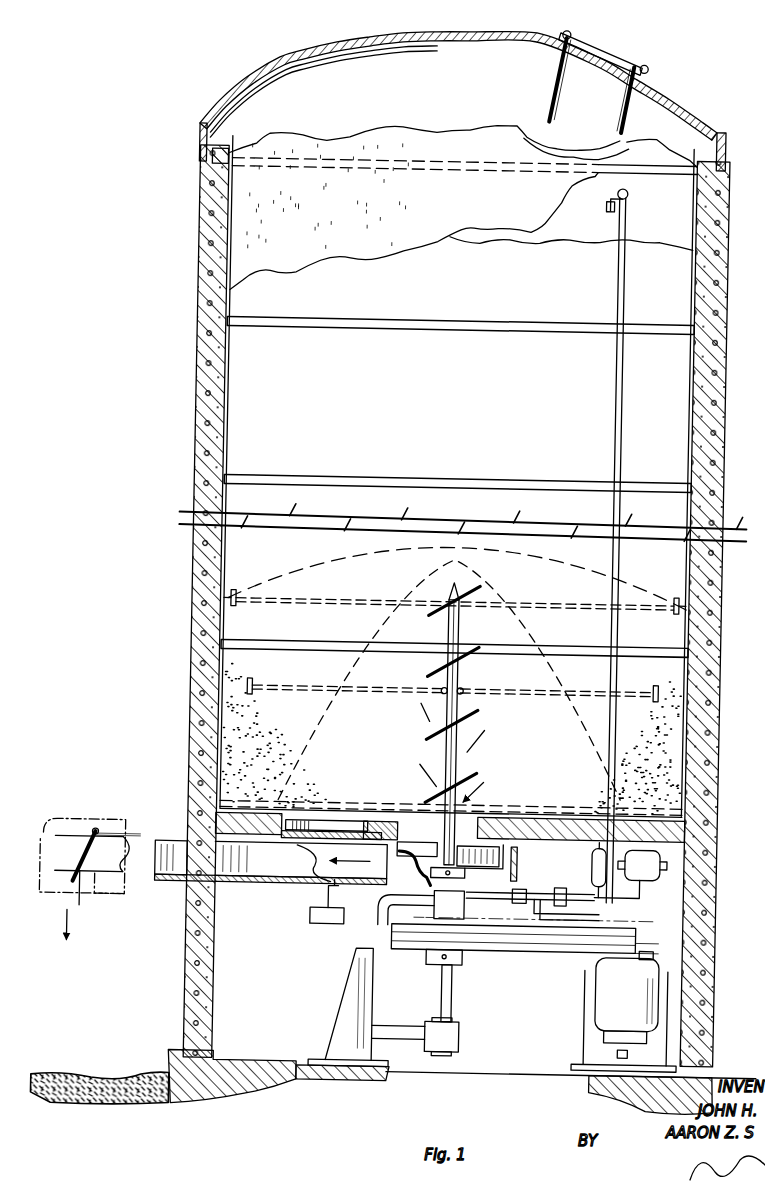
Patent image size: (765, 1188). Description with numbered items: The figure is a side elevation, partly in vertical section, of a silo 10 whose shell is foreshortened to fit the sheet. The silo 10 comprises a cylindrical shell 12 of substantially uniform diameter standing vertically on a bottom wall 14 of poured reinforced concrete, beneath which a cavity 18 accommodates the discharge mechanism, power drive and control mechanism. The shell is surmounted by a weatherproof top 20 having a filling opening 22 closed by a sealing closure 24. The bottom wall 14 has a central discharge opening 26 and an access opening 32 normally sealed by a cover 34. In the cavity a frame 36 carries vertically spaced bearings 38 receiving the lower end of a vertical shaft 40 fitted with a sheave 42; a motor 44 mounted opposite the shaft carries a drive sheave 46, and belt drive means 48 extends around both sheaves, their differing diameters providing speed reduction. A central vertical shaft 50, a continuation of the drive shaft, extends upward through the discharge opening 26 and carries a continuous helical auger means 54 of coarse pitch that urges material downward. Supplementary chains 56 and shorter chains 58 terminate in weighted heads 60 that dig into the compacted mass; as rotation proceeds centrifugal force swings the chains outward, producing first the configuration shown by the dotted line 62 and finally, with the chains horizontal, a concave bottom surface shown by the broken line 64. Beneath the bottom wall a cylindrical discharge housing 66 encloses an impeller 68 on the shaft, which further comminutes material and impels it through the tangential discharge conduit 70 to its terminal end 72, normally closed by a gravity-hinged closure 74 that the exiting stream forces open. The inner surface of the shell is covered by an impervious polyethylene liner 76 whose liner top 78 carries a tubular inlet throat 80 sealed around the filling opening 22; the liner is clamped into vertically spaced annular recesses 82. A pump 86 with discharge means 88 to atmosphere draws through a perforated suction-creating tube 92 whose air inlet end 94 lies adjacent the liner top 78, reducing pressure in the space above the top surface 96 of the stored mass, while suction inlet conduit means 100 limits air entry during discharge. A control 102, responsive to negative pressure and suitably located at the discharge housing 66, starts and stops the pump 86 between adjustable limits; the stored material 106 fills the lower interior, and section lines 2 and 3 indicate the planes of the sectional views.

The silo 10 is at (441, 545).
The cylindrical shell 12 is at (725, 402).
The bottom wall 14 is at (546, 813).
The cavity 18 is at (529, 1037).
The top 20 is at (291, 64).
The filling opening 22 is at (606, 69).
The closure 24 is at (594, 40).
The discharge opening 26 is at (486, 807).
The access opening 32 is at (343, 822).
The cover 34 is at (311, 864).
The frame 36 is at (348, 999).
The bearings 38 is at (478, 1034).
The shaft 40 is at (449, 991).
The sheave 42 is at (485, 947).
The motor 44 is at (606, 998).
The drive sheave 46 is at (660, 949).
The belt drive means 48 is at (557, 944).
The central vertical shaft 50 is at (463, 679).
The auger means 54 is at (470, 644).
The chains 56 is at (330, 604).
The chains 58 is at (394, 695).
The heads 60 is at (238, 600).
The dotted line 62 is at (335, 717).
The broken line 64 is at (281, 573).
The discharge housing 66 is at (525, 884).
The impeller 68 is at (405, 823).
The discharge conduit 70 is at (184, 886).
The terminal end 72 is at (91, 902).
The closure 74 is at (69, 833).
The liner 76 is at (447, 217).
The liner top 78 is at (450, 130).
The tubular inlet throat 80 is at (547, 77).
The annular recesses 82 is at (203, 177).
The pump 86 is at (598, 858).
The discharge means 88 is at (655, 890).
The suction-creating tube 92 is at (617, 281).
The air inlet end 94 is at (600, 201).
The top surface 96 is at (665, 246).
The suction inlet conduit means 100 is at (511, 892).
The control 102 is at (332, 918).
The stored material 106 is at (264, 733).
The section line 2- 2 is at (152, 844).
The section line 3- 3 is at (263, 904).